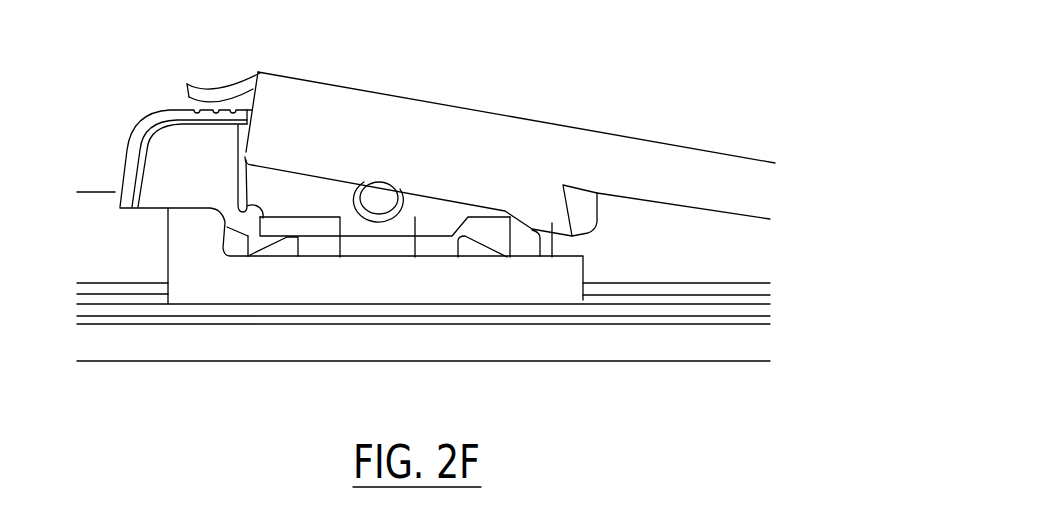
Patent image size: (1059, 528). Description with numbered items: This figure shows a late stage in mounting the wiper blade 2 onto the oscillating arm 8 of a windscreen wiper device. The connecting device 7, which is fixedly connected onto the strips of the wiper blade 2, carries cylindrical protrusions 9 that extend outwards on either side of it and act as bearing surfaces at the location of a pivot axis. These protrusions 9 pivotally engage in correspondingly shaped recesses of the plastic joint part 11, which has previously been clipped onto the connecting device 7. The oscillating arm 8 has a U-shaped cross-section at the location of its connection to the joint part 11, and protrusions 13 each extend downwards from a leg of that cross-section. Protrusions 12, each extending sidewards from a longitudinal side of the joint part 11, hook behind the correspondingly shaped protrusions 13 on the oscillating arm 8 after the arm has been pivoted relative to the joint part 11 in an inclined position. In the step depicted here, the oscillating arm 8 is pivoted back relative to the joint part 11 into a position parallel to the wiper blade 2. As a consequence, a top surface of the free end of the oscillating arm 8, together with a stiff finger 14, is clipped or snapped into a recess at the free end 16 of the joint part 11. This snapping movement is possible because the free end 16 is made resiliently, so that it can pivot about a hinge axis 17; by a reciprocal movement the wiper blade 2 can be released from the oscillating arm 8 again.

The wiper blade 2 is at (722, 340).
The connecting device 7 is at (497, 304).
The oscillating arm 8 is at (603, 150).
The cylindrical protrusions 9 is at (390, 205).
The joint part 11 is at (327, 193).
The protrusions 12 is at (583, 217).
The protrusion 13 is at (552, 223).
The stiff finger 14 is at (194, 83).
The free end 16 is at (140, 133).
The hinge axis 17 is at (248, 256).